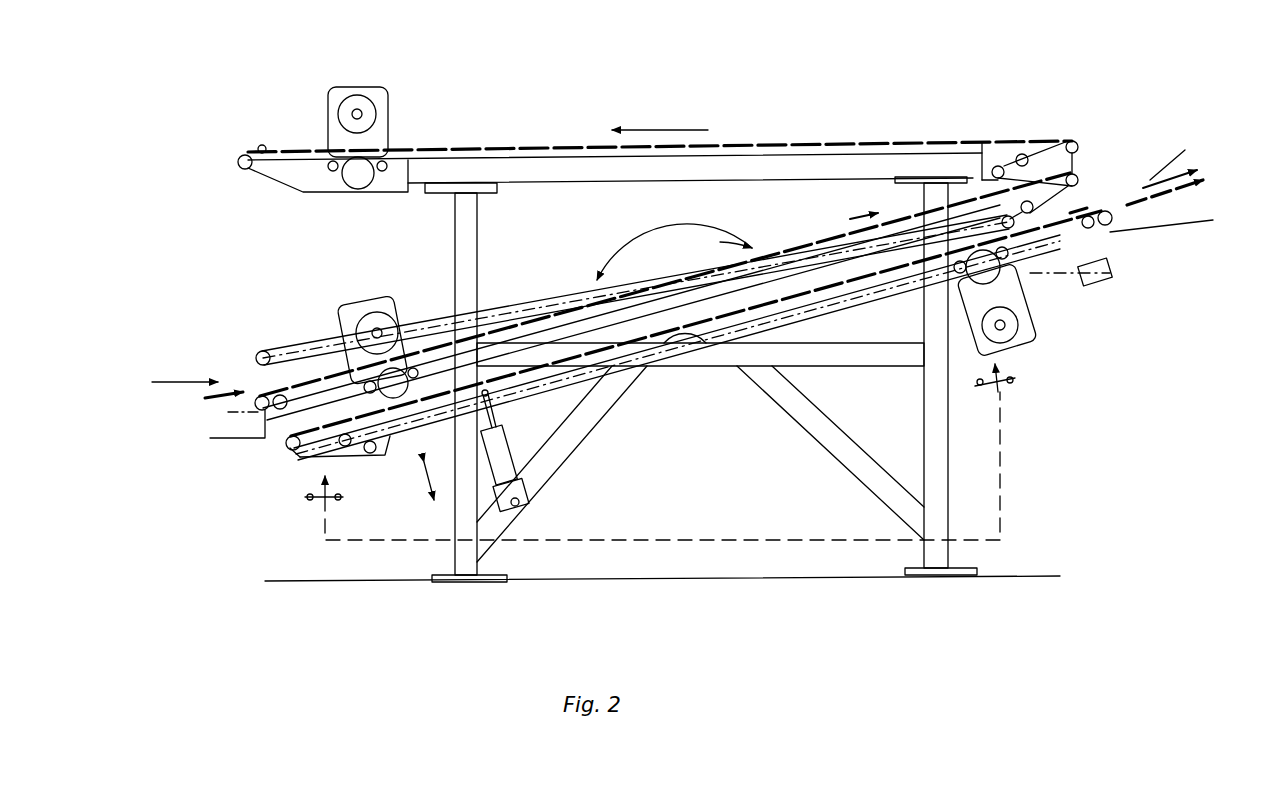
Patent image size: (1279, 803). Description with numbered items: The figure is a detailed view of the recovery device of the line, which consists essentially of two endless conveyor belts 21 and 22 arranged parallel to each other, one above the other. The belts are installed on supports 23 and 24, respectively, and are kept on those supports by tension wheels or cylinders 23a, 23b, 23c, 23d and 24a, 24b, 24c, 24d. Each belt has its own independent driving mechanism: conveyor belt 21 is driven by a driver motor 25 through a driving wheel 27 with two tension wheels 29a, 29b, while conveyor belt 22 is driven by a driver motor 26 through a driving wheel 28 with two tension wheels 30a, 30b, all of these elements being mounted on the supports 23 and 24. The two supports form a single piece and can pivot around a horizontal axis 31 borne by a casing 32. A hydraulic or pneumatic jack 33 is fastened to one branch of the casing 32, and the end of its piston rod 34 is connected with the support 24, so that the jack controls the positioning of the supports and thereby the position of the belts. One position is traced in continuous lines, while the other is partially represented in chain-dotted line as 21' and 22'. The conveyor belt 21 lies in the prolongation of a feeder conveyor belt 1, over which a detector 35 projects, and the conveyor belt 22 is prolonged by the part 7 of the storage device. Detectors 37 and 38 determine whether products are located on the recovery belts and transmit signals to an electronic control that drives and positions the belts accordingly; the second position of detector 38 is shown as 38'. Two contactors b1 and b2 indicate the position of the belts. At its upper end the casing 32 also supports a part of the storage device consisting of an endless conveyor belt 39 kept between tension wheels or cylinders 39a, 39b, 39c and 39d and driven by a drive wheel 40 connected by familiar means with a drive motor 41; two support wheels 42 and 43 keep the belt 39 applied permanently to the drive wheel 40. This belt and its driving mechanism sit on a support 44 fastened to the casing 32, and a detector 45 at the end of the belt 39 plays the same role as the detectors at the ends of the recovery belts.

The feeder conveyor belt 1 is at (232, 420).
The part of the storage device 7 is at (1190, 208).
The conveyor belt 21 is at (674, 237).
The second position of conveyor belt 21 21' is at (632, 290).
The conveyor belt 22 is at (818, 234).
The second position of conveyor belt 22 22' is at (1109, 355).
The support 23 is at (665, 296).
The tension wheel 23a is at (1083, 203).
The tension wheel 23b is at (1024, 200).
The tension wheel 23c is at (1005, 215).
The tension wheel 23d is at (258, 396).
The support 24 is at (797, 334).
The tension wheel 24a is at (287, 447).
The tension wheel 24b is at (297, 460).
The tension wheel 24c is at (370, 455).
The tension wheel 24d is at (1113, 232).
The driver motor 25 is at (380, 300).
The driver motor 26 is at (1030, 345).
The driving wheel 27 is at (407, 370).
The driving wheel 28 is at (1030, 295).
The tension wheel 29a is at (363, 392).
The tension wheel 29b is at (418, 365).
The tension wheel 30a is at (955, 273).
The tension wheel 30b is at (1009, 253).
The axis 31 is at (683, 322).
The casing 32 is at (705, 431).
The jack 33 is at (522, 470).
The piston rod 34 is at (497, 412).
The detector 35 is at (215, 400).
The detector 37 is at (1080, 166).
The detector 38 is at (1177, 149).
The second position of detector 38 38' is at (1126, 281).
The endless conveyor belt 39 is at (780, 145).
The tension wheel 39a is at (1078, 141).
The tension wheel 39b is at (1024, 153).
The tension wheel 39c is at (998, 165).
The tension wheel 39d is at (242, 156).
The drive wheel 40 is at (372, 160).
The drive motor 41 is at (366, 88).
The support wheel 42 is at (387, 162).
The support wheel 43 is at (330, 162).
The support 44 is at (862, 172).
The detector 45 is at (261, 145).
The contactor b1 is at (308, 500).
The contactor b2 is at (982, 388).